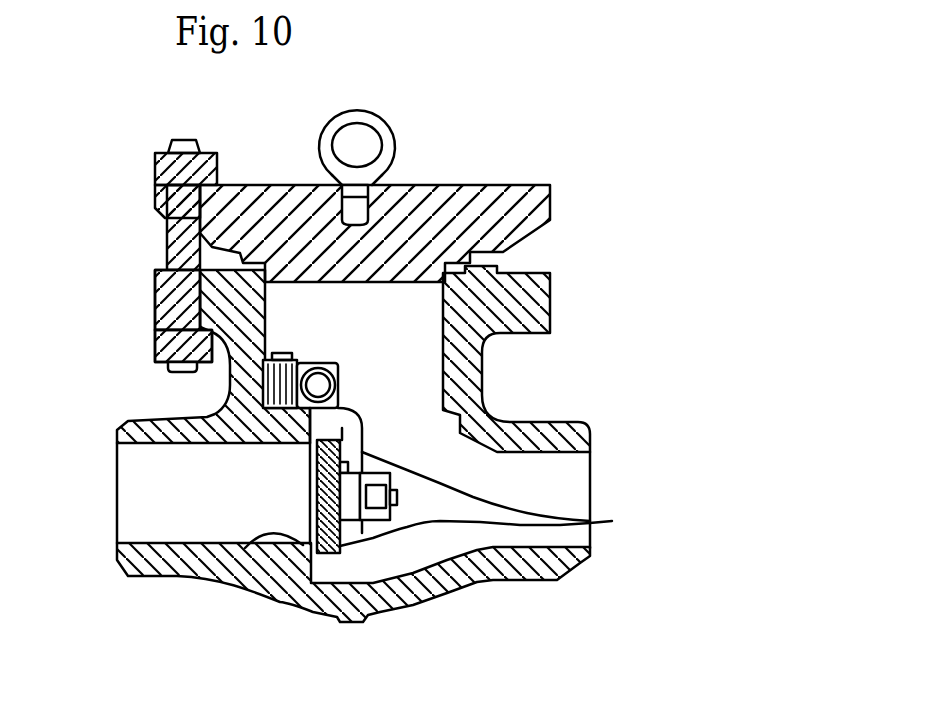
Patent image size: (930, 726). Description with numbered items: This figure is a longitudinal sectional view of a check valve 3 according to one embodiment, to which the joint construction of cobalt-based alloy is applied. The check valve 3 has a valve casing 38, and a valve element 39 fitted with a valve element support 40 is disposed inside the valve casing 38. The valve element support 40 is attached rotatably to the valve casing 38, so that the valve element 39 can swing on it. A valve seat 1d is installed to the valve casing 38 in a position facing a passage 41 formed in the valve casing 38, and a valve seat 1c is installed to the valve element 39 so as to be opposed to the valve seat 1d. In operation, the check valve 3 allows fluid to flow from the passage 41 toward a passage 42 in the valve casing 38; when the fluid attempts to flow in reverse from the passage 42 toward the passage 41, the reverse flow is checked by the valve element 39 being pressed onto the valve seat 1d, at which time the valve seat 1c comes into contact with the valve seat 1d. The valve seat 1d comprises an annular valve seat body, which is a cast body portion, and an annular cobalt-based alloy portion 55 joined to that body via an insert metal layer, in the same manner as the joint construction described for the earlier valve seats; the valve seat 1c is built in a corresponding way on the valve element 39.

The check valve 3 is at (528, 390).
The valve casing 38 is at (143, 438).
The valve element 39 is at (303, 506).
The valve element support 40 is at (345, 398).
The passage 41 is at (130, 498).
The passage 42 is at (582, 480).
The cobalt-based alloy portion 55 is at (291, 420).
The valve seat 1c is at (600, 529).
The valve seat 1d is at (300, 545).